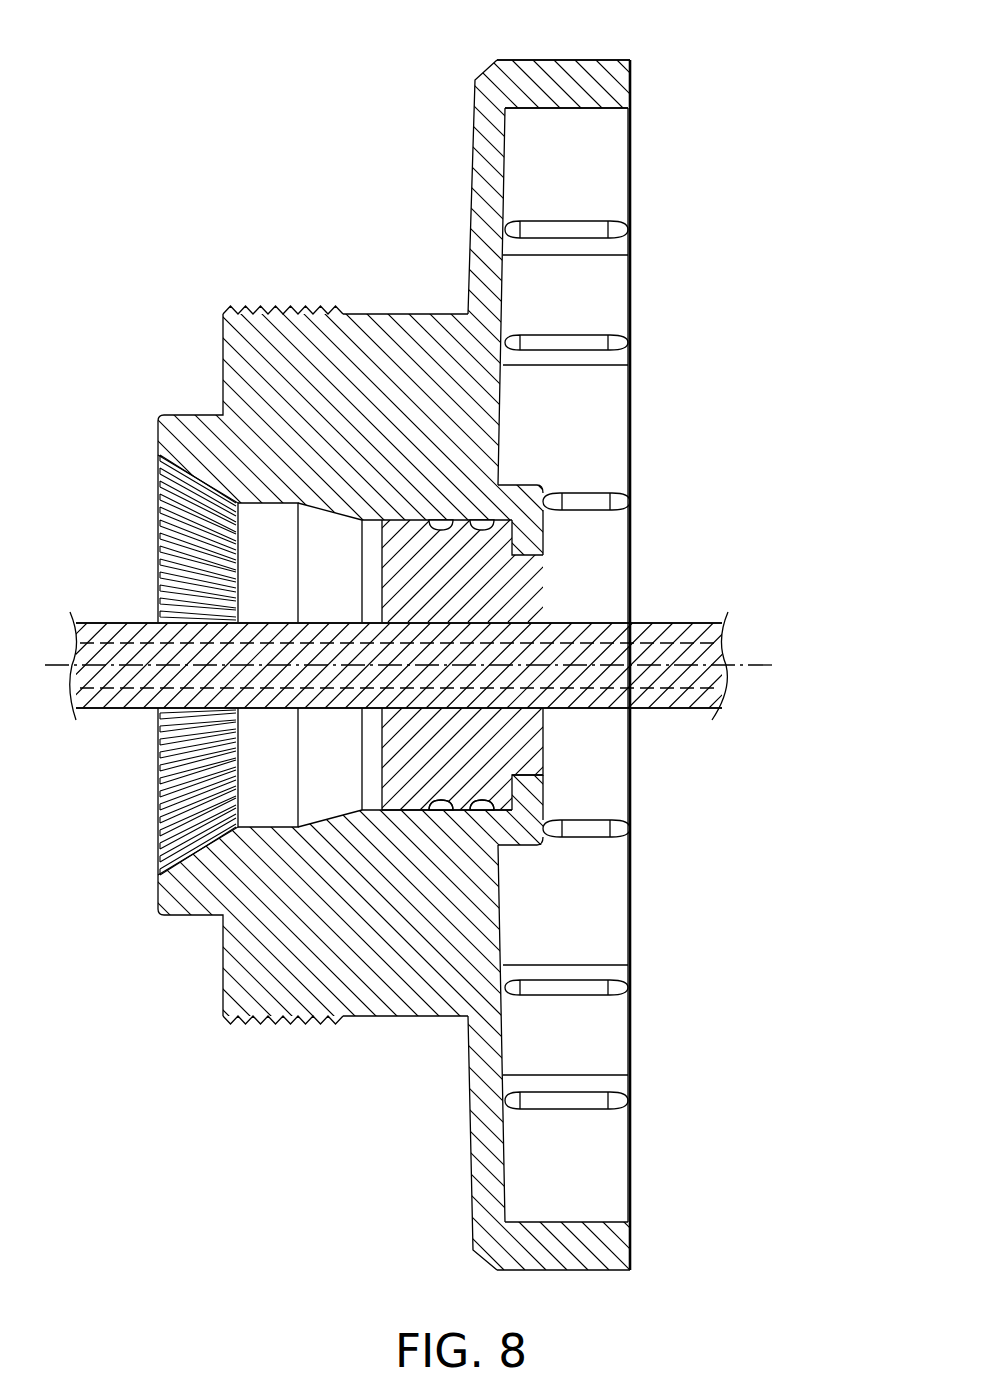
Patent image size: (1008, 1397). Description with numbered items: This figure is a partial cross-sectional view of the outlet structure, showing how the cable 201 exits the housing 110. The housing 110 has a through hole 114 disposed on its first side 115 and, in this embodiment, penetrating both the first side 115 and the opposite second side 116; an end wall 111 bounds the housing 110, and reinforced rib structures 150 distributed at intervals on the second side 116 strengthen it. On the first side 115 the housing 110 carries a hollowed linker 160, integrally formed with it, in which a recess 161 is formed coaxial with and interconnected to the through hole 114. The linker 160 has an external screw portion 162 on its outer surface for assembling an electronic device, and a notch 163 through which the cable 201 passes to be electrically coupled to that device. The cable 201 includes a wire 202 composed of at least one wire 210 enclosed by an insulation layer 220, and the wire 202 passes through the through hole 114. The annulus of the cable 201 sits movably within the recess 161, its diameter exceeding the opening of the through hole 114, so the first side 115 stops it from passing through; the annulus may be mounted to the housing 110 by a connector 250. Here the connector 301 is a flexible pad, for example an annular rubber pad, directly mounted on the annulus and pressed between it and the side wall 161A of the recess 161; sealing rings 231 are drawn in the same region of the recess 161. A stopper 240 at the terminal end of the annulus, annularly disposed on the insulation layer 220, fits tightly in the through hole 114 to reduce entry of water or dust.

The housing 110 is at (633, 56).
The housing end wall 111 is at (525, 68).
The through hole 114 is at (525, 543).
The first side 115 is at (380, 520).
The second side 116 is at (543, 535).
The reinforced rib structures 150 is at (620, 345).
The linker 160 is at (222, 353).
The recess 161 is at (320, 509).
The side wall of the recess 161A is at (412, 518).
The external screw portion 162 is at (292, 304).
The notch 163 is at (156, 546).
The cable 201 is at (825, 748).
The wire 202 is at (767, 737).
The wire 210 is at (695, 684).
The insulation layer 220 is at (676, 706).
The sealing rings 231 is at (472, 786).
The stopper 240 is at (523, 733).
The connector 250 is at (515, 787).
The connector 301 is at (483, 812).